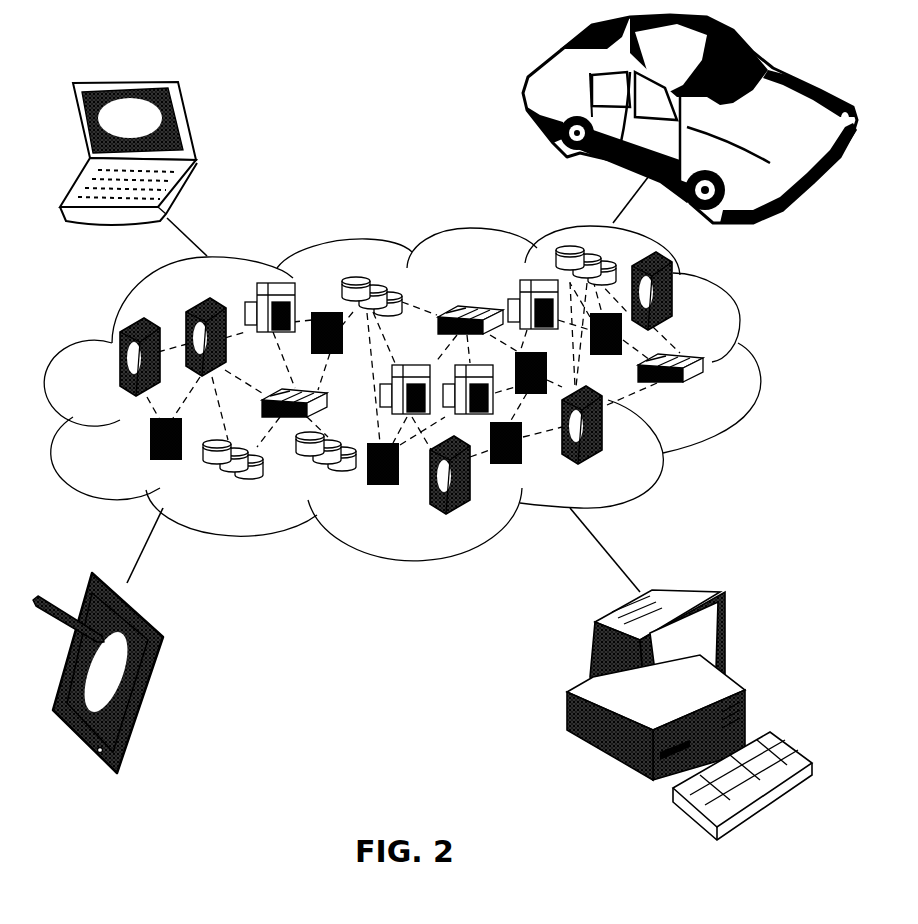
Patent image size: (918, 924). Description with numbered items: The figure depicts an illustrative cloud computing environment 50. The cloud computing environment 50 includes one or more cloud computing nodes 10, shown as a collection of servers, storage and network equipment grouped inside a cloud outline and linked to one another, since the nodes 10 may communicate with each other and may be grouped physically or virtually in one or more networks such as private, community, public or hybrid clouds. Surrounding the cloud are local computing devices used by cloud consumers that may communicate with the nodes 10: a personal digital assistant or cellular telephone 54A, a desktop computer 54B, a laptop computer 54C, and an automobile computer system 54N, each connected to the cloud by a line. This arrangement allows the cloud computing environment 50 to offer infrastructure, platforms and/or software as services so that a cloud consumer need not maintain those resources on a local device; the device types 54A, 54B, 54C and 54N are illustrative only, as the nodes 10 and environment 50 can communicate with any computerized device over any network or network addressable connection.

The cloud computing node 10 is at (716, 396).
The cloud computing environment 50 is at (757, 368).
The personal digital assistant (PDA) or cellular telephone 54A is at (157, 665).
The desktop computer 54B is at (693, 587).
The laptop computer 54C is at (190, 122).
The automobile computer system 54N is at (533, 97).